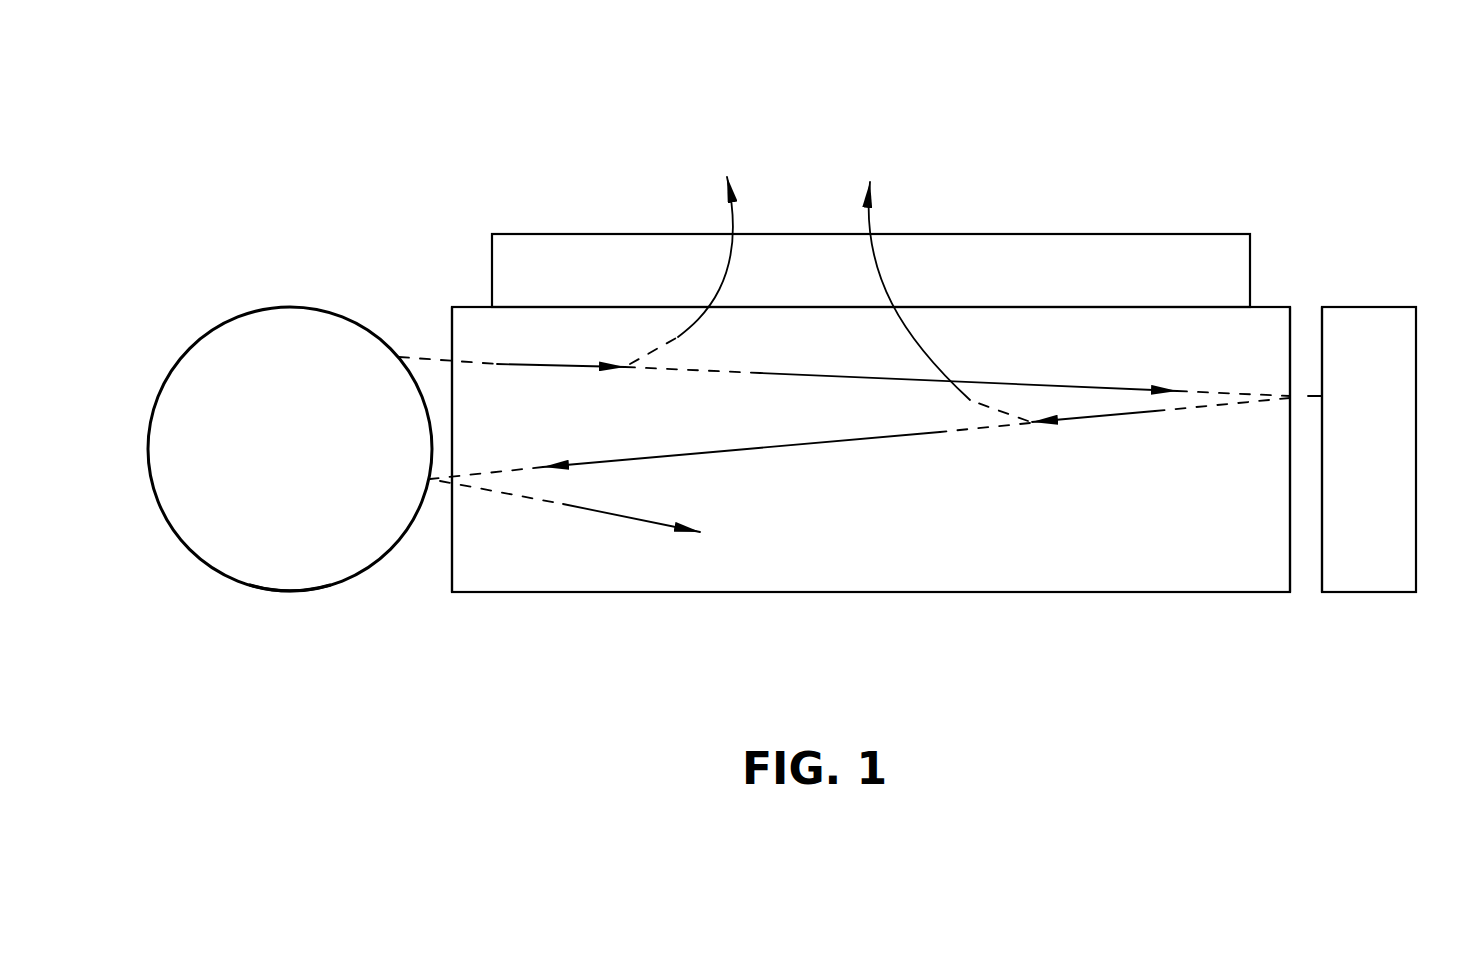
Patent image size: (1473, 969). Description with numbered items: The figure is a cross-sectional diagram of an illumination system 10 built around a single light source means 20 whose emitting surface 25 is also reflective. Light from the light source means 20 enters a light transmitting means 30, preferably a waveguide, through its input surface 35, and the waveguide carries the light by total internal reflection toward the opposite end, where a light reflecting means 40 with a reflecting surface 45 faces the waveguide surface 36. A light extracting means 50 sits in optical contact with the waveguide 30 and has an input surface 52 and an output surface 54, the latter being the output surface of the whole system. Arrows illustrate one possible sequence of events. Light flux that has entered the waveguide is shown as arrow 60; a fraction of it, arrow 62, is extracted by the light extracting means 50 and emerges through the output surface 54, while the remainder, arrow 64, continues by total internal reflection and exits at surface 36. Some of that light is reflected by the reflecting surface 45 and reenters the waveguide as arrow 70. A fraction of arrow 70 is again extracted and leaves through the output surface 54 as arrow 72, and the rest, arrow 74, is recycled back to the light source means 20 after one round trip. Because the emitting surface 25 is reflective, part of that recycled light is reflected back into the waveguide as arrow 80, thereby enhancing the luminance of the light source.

The illumination system 10 is at (1207, 110).
The light source means 20 is at (228, 557).
The reflecting emitting surface 25 is at (292, 592).
The light transmitting means 30 is at (1077, 573).
The input surface 35 is at (452, 571).
The surface 36 is at (1290, 562).
The light reflecting means 40 is at (1405, 488).
The reflecting surface 45 is at (1322, 562).
The light extracting means 50 is at (1158, 244).
The input surface 52 is at (1068, 306).
The output surface 54 is at (967, 233).
The light flux entering waveguide 60 is at (559, 363).
The extracted light 62 is at (686, 252).
The remaining light 64 is at (854, 374).
The reentering light 70 is at (1094, 421).
The extracted reflected light 72 is at (940, 280).
The recycled light 74 is at (725, 450).
The reflected recycled light 80 is at (632, 512).